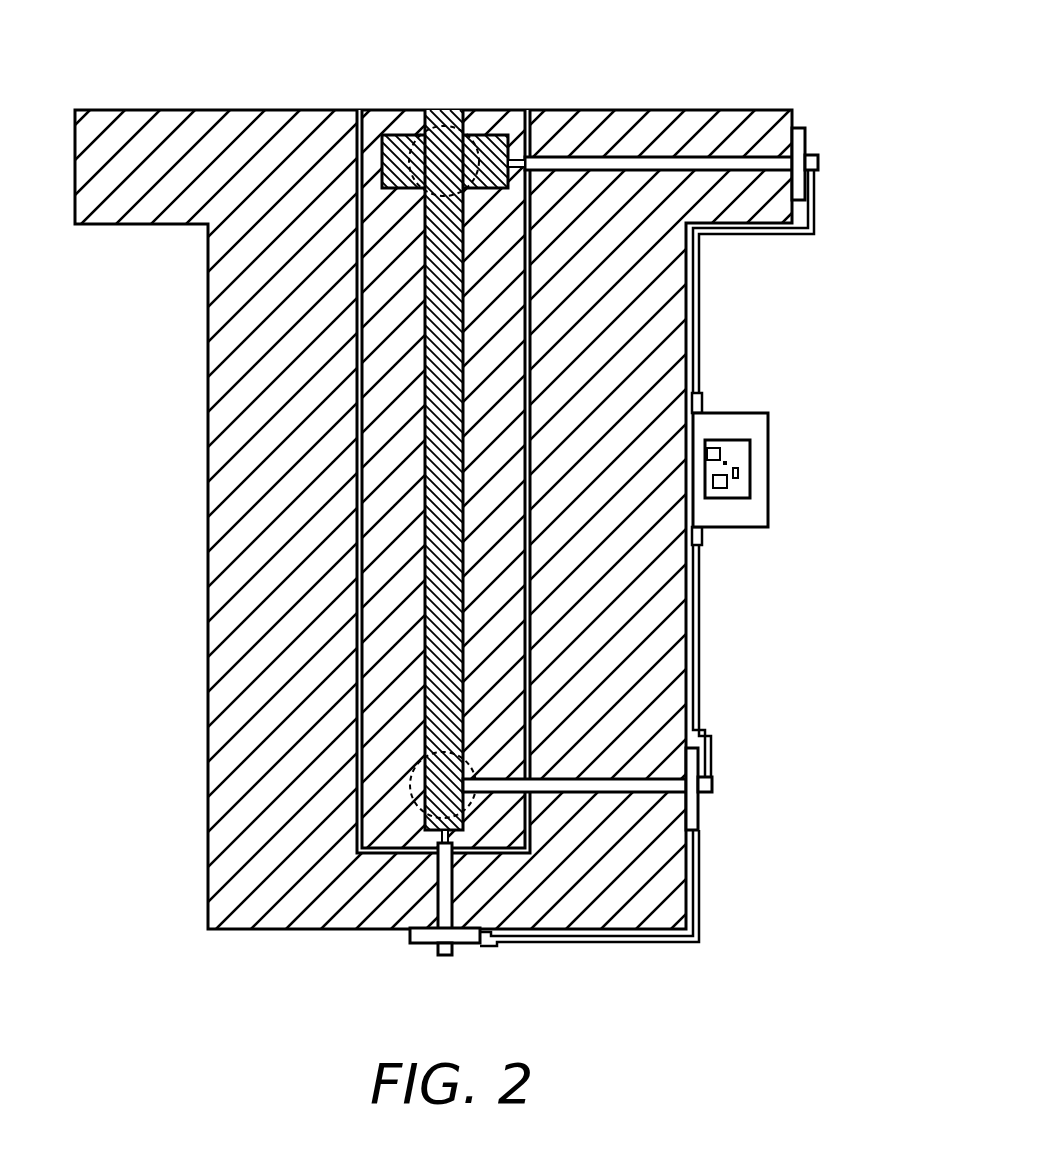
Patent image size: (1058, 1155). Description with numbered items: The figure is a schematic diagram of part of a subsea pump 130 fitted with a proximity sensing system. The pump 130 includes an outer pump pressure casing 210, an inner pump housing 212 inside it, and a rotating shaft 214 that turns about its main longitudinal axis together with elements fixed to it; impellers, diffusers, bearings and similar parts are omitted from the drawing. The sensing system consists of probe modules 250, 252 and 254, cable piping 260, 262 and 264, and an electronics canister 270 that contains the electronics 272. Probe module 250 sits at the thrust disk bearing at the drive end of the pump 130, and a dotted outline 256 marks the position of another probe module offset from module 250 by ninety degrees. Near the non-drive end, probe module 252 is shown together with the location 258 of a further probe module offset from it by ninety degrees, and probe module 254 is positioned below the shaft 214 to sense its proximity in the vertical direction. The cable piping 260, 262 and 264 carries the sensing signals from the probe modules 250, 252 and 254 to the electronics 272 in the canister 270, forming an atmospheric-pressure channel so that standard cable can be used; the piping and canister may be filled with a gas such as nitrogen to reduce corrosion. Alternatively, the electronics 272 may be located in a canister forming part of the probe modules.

The subsea pump 130 is at (650, 66).
The outer pump pressure casing 210 is at (433, 519).
The inner pump housing 212 is at (372, 378).
The rotating shaft 214 is at (427, 490).
The probe module 250 is at (742, 150).
The probe module 252 is at (648, 793).
The probe module 254 is at (433, 905).
The dotted outline 256 is at (447, 130).
The location of another probe module 258 is at (410, 776).
The cable piping 260 is at (700, 278).
The cable piping 262 is at (700, 650).
The cable piping 264 is at (595, 940).
The electronics canister 270 is at (768, 447).
The electronics 272 is at (735, 495).